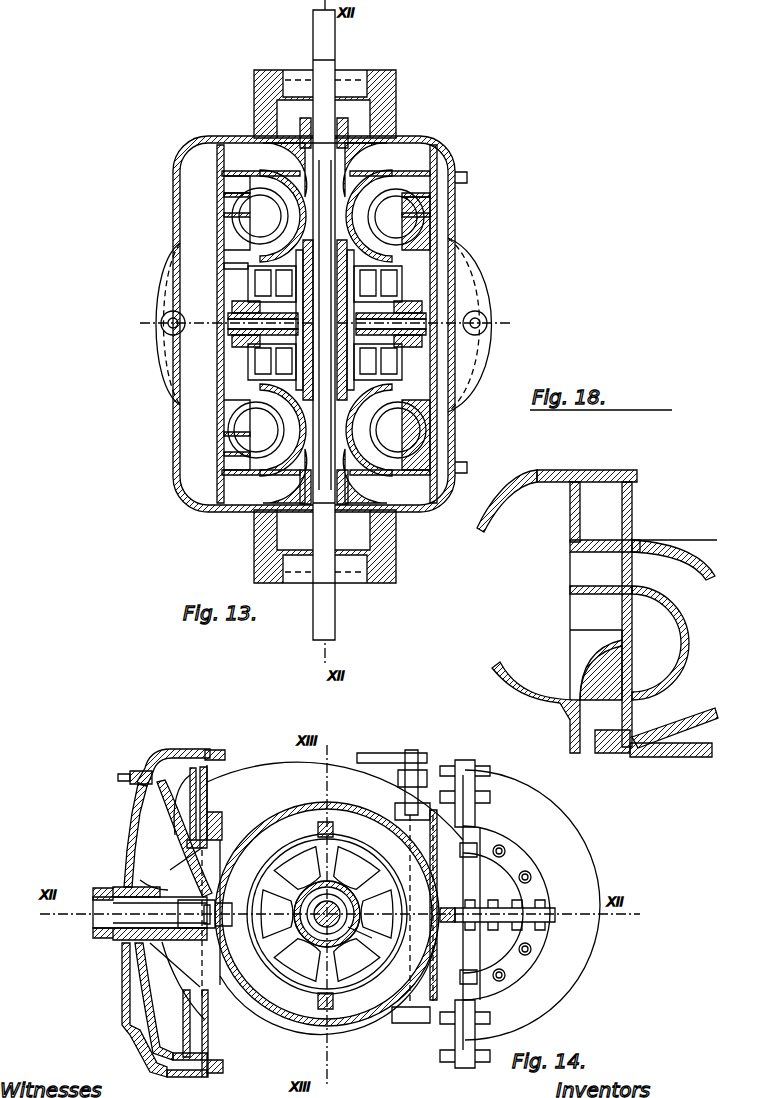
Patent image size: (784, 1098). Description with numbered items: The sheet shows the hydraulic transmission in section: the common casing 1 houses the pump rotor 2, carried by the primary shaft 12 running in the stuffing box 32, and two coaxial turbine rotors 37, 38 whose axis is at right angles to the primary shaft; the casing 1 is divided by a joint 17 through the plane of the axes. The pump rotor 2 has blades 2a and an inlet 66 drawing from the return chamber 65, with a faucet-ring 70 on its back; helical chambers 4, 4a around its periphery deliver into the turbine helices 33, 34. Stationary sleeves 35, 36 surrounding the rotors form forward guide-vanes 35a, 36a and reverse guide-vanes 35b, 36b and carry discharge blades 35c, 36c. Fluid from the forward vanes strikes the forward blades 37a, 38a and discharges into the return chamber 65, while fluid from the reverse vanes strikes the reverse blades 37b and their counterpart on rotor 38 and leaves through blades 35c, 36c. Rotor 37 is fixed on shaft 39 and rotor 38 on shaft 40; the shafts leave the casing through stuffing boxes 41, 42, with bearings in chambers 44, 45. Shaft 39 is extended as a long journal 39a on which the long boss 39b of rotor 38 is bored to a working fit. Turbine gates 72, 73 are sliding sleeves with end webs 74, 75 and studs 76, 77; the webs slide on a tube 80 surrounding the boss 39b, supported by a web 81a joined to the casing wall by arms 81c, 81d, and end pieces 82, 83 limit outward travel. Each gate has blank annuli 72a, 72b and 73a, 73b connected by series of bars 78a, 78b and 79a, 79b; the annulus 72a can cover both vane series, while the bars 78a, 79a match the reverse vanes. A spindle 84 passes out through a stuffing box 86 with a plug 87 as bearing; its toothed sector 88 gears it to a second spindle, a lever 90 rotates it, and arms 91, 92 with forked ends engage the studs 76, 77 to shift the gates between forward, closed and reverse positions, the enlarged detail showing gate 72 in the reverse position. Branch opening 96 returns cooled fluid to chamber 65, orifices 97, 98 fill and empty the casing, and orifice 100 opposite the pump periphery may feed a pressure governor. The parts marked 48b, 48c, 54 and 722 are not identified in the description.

In FIG. 13, the casing 1 is at (176, 205).
In FIG. 18, the casing 1 is at (562, 456).
In FIG. 14, the casing 1 is at (335, 906).
In FIG. 14, the pump rotor 2 is at (150, 832).
In FIG. 14, the blades 2a is at (190, 864).
In FIG. 14, the helical chamber 4 is at (187, 1033).
In FIG. 14, the helical chamber 4a is at (173, 797).
In FIG. 14, the primary shaft 12 is at (150, 913).
In FIG. 14, the joint 17 is at (490, 930).
In FIG. 14, the stuffing box 32 is at (118, 940).
In FIG. 13, the helical chamber 33 is at (324, 295).
In FIG. 13, the helical chamber 34 is at (460, 465).
In FIG. 13, the stationary cylindrical sleeve 35 is at (218, 166).
In FIG. 18, the stationary cylindrical sleeve 35 is at (570, 515).
In FIG. 13, the forward guide-vanes 35a is at (327, 183).
In FIG. 18, the forward guide-vanes 35a is at (643, 557).
In FIG. 13, the reverse guide-vanes 35b is at (327, 203).
In FIG. 18, the reverse guide-vanes 35b is at (601, 600).
In FIG. 13, the blades 35c is at (327, 223).
In FIG. 18, the blades 35c is at (602, 678).
In FIG. 13, the stationary cylindrical sleeve 36 is at (309, 435).
In FIG. 13, the forward guide-vanes 36a is at (235, 463).
In FIG. 13, the reverse guide-vanes 36b is at (235, 441).
In FIG. 13, the blades 36c is at (234, 414).
In FIG. 13, the turbine rotor 37 is at (328, 216).
In FIG. 18, the turbine rotor 37 is at (682, 596).
In FIG. 13, the forward turbine rotor blades 37a is at (361, 209).
In FIG. 18, the forward turbine rotor blades 37a is at (673, 564).
In FIG. 13, the reverse rotor blades 37b is at (260, 213).
In FIG. 18, the reverse rotor blades 37b is at (653, 646).
In FIG. 13, the turbine rotor 38 is at (327, 430).
In FIG. 13, the forward turbine rotor blades 38a is at (288, 448).
In FIG. 13, the shaft 39 is at (324, 325).
In FIG. 13, the long journal 39a is at (328, 296).
In FIG. 14, the long journal 39a is at (279, 910).
In FIG. 13, the long boss 39b is at (328, 350).
In FIG. 14, the long boss 39b is at (364, 938).
In FIG. 13, the shaft 40 is at (324, 487).
In FIG. 13, the stuffing box 41 is at (338, 135).
In FIG. 13, the stuffing box 42 is at (312, 518).
In FIG. 13, the chamber 44 is at (325, 104).
In FIG. 13, the chamber 45 is at (325, 546).
In FIG. 14, the flange nut 48b is at (422, 800).
In FIG. 14, the flange 48c is at (545, 815).
In FIG. 14, the flange ring 54 is at (505, 913).
In FIG. 13, the return chamber 65 is at (325, 384).
In FIG. 14, the return chamber 65 is at (239, 847).
In FIG. 14, the inlet 66 is at (212, 955).
In FIG. 14, the faucet-ring 70 is at (140, 872).
In FIG. 13, the turbine gate 72 is at (235, 269).
In FIG. 18, the turbine gate 72 is at (706, 640).
In FIG. 13, the blank annular portion 72a is at (316, 324).
In FIG. 18, the blank annular portion 72a is at (632, 515).
In FIG. 18, the blank annular portion 72b is at (634, 712).
In FIG. 13, the drum shell 722 is at (248, 300).
In FIG. 13, the turbine gate 73 is at (230, 373).
In FIG. 14, the turbine gate 73 is at (262, 868).
In FIG. 13, the blank annular portion 73a is at (224, 440).
In FIG. 13, the blank annular portion 73b is at (275, 339).
In FIG. 13, the end web 74 is at (272, 288).
In FIG. 18, the end web 74 is at (652, 757).
In FIG. 13, the end web 75 is at (325, 362).
In FIG. 14, the end web 75 is at (309, 910).
In FIG. 13, the studs 76 is at (232, 316).
In FIG. 18, the studs 76 is at (604, 753).
In FIG. 14, the studs 76 is at (318, 828).
In FIG. 13, the studs 77 is at (327, 350).
In FIG. 14, the studs 77 is at (318, 1002).
In FIG. 13, the annular bars 78a is at (265, 249).
In FIG. 18, the annular bars 78a is at (597, 652).
In FIG. 13, the annular bars 78b is at (275, 269).
In FIG. 18, the annular bars 78b is at (602, 673).
In FIG. 13, the annular bars 79a is at (263, 395).
In FIG. 13, the annular bars 79b is at (277, 365).
In FIG. 13, the tube 80 is at (378, 288).
In FIG. 13, the top web 81a is at (340, 296).
In FIG. 14, the arm 81c is at (400, 878).
In FIG. 14, the arm 81d is at (385, 1056).
In FIG. 13, the end piece 82 is at (325, 320).
In FIG. 13, the end piece 83 is at (284, 412).
In FIG. 14, the spindle 84 is at (455, 764).
In FIG. 14, the stuffing box 86 is at (405, 812).
In FIG. 14, the plug 87 is at (416, 1023).
In FIG. 14, the toothed sector 88 is at (427, 776).
In FIG. 14, the lever 90 is at (372, 753).
In FIG. 14, the arm 91 is at (370, 855).
In FIG. 14, the arm 92 is at (335, 822).
In FIG. 14, the branch opening 96 is at (223, 898).
In FIG. 14, the orifice 97 is at (216, 758).
In FIG. 14, the orifice 98 is at (214, 1073).
In FIG. 14, the orifice 100 is at (138, 771).